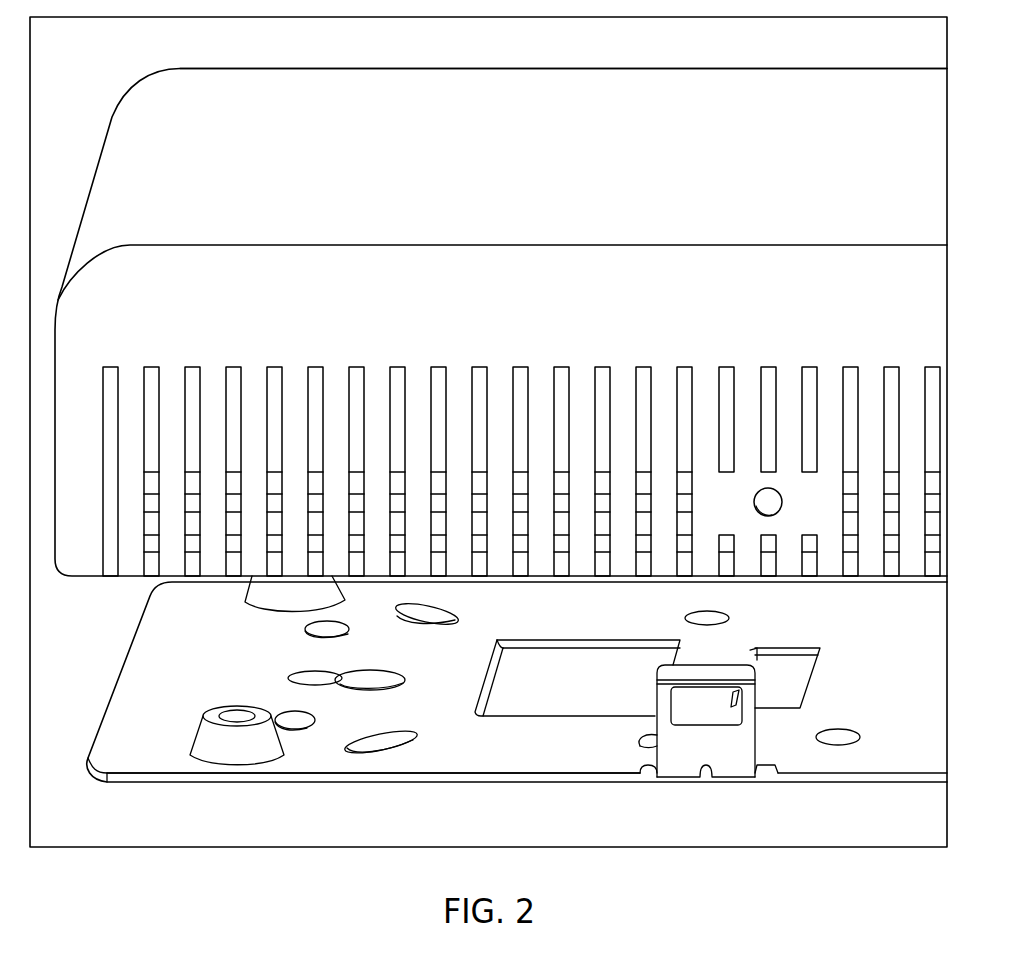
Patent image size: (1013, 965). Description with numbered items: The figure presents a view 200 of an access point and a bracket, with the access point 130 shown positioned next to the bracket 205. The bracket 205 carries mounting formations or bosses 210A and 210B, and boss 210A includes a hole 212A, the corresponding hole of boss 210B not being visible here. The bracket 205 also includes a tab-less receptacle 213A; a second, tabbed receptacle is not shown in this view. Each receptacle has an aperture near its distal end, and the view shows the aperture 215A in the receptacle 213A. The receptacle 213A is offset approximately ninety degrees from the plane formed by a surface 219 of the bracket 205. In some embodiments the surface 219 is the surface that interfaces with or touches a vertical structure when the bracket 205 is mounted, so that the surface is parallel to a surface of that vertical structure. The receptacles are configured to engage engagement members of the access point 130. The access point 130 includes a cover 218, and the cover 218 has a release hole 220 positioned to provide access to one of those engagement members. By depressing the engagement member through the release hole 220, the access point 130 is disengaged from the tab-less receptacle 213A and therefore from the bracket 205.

The view 200 is at (122, 72).
The access point 130 is at (125, 162).
The cover 218 is at (528, 115).
The release hole 220 is at (771, 505).
The bracket 205 is at (113, 678).
The surface 219 is at (485, 752).
The mounting formation or boss 210A is at (196, 736).
The mounting formation or boss 210B is at (272, 597).
The hole 212A is at (240, 707).
The tab-less receptacle 213A is at (757, 748).
The aperture 215A is at (700, 707).